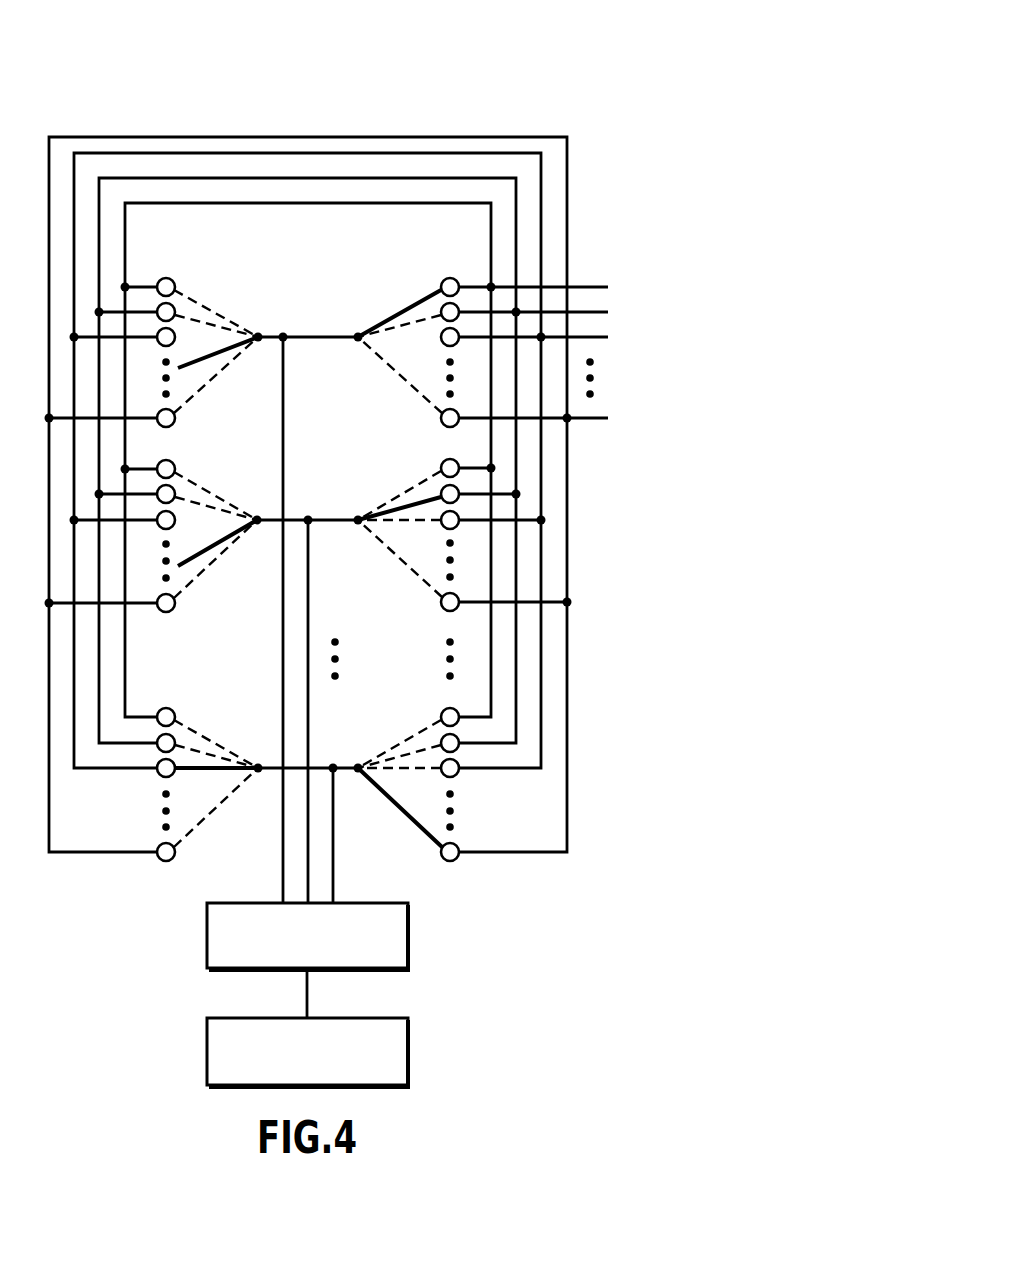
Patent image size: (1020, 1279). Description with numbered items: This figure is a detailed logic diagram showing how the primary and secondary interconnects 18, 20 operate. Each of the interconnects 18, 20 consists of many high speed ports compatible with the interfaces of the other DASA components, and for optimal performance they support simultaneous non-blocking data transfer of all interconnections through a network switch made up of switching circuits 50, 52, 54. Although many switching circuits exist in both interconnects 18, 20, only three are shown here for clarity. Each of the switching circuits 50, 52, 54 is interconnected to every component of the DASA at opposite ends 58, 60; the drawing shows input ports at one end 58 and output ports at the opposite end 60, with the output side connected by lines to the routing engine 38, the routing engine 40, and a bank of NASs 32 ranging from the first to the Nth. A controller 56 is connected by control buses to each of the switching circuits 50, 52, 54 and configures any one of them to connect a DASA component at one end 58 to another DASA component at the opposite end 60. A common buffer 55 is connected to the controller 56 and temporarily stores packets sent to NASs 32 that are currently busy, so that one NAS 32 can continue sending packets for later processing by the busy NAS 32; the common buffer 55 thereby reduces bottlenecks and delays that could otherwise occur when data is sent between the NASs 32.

The primary interconnect 18 is at (516, 100).
The secondary interconnect 20 is at (516, 100).
The NAS 32 is at (603, 379).
The routing engine 38 is at (673, 287).
The routing engine 40 is at (673, 312).
The switching circuit 50 is at (323, 333).
The switching circuit 52 is at (333, 516).
The switching circuit 54 is at (348, 763).
The common buffer 55 is at (410, 1052).
The controller 56 is at (410, 935).
The one end 58 is at (166, 277).
The opposite end 60 is at (450, 277).